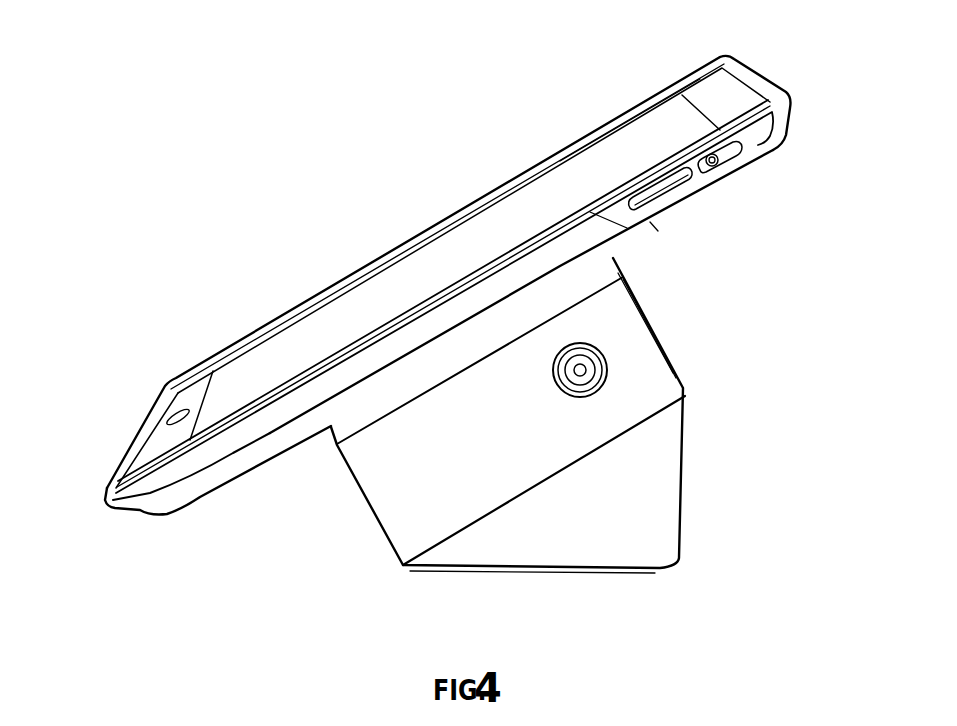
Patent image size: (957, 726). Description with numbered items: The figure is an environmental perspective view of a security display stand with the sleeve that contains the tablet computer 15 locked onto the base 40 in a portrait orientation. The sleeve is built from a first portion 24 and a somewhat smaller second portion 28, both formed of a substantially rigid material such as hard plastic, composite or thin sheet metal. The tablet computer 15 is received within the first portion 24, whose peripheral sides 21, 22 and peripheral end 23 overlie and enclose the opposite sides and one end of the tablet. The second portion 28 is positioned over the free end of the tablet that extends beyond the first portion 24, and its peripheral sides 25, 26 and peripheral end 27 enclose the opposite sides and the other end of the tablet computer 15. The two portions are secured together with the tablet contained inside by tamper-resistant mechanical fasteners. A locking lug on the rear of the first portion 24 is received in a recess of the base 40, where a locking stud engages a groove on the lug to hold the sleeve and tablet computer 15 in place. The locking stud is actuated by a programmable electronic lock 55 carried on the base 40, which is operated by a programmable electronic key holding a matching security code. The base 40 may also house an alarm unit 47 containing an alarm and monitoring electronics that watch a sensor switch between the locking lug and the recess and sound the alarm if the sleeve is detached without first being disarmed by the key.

The tablet computer 15 is at (367, 303).
The peripheral side 21 is at (253, 333).
The peripheral side 22 is at (243, 452).
The peripheral end 23 is at (142, 433).
The first portion 24 is at (455, 219).
The peripheral side 25 is at (670, 84).
The peripheral side 26 is at (763, 136).
The peripheral end 27 is at (767, 84).
The second portion 28 is at (626, 119).
The base 40 is at (362, 503).
The alarm unit 47 is at (682, 487).
The programmable electronic lock 55 is at (606, 361).